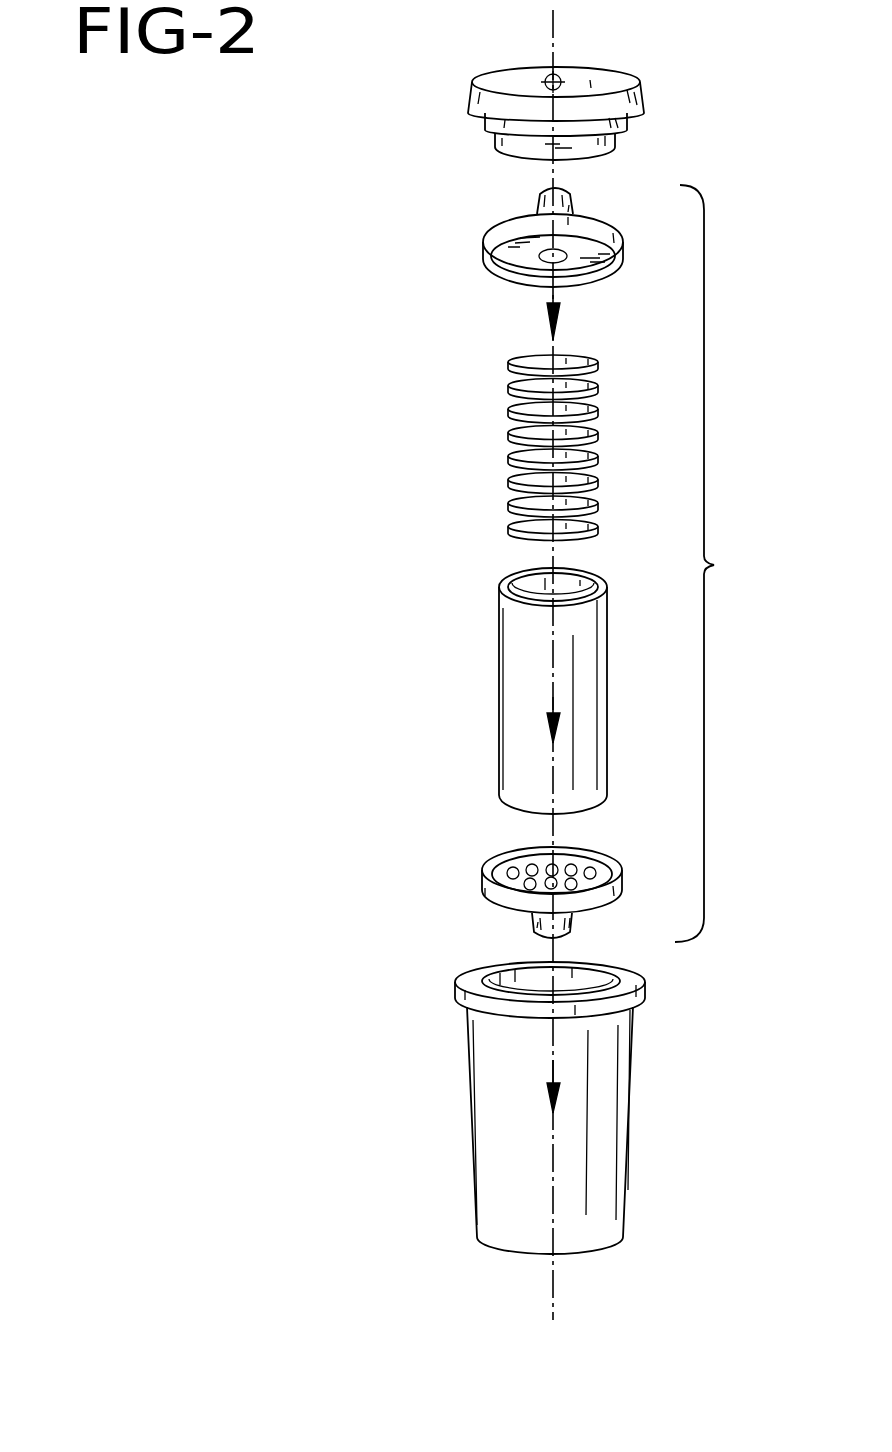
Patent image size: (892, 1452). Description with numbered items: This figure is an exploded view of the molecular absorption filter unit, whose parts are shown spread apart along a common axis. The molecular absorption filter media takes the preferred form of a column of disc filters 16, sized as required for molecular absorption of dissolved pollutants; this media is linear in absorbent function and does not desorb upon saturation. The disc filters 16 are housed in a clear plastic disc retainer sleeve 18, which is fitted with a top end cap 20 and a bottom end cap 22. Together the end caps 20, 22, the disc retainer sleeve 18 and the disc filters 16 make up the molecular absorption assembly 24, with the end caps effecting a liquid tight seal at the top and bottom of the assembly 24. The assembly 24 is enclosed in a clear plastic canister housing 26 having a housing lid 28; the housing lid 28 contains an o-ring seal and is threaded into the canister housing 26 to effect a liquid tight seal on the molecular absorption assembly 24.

The molecular absorption disc filters 16 is at (510, 457).
The disc retainer sleeve 18 is at (500, 689).
The top end cap 20 is at (483, 248).
The bottom end cap 22 is at (483, 880).
The molecular absorption assembly 24 is at (718, 563).
The canister housing 26 is at (614, 1122).
The housing lid 28 is at (640, 95).